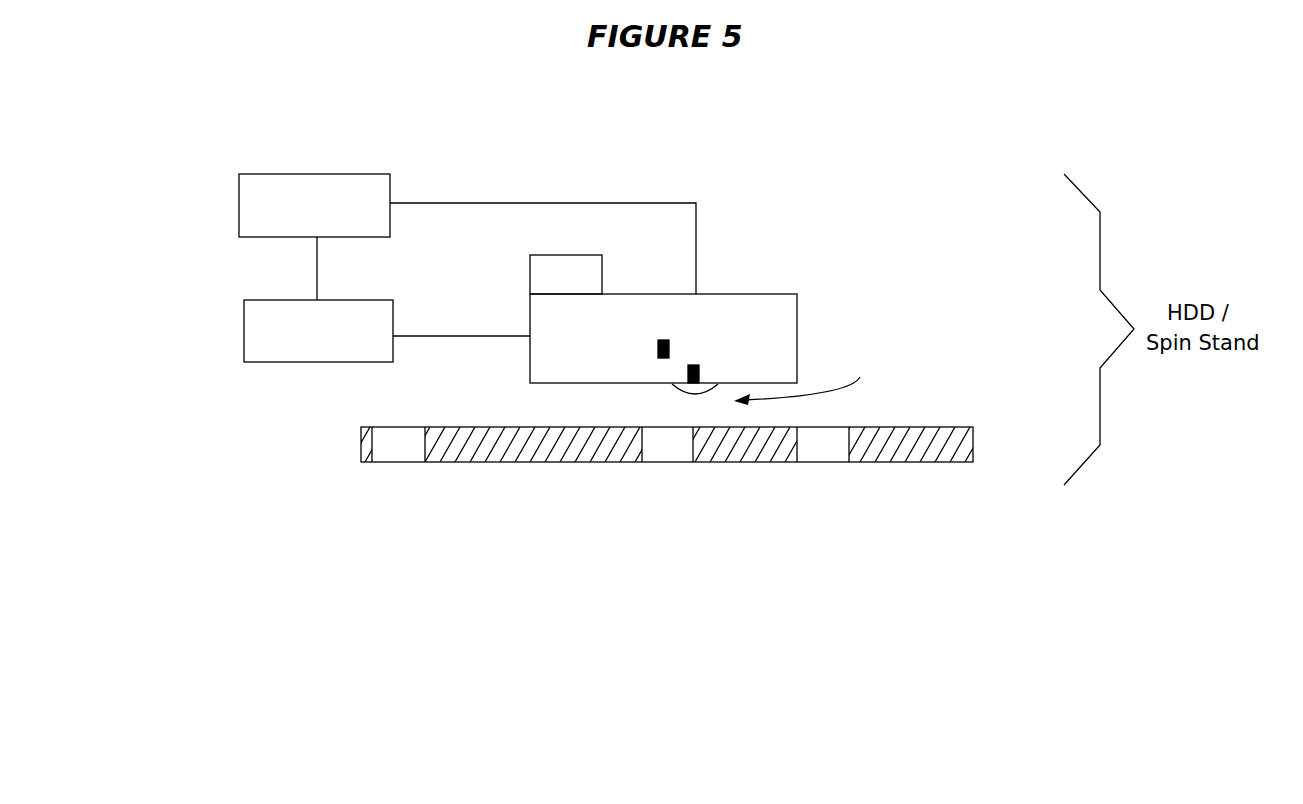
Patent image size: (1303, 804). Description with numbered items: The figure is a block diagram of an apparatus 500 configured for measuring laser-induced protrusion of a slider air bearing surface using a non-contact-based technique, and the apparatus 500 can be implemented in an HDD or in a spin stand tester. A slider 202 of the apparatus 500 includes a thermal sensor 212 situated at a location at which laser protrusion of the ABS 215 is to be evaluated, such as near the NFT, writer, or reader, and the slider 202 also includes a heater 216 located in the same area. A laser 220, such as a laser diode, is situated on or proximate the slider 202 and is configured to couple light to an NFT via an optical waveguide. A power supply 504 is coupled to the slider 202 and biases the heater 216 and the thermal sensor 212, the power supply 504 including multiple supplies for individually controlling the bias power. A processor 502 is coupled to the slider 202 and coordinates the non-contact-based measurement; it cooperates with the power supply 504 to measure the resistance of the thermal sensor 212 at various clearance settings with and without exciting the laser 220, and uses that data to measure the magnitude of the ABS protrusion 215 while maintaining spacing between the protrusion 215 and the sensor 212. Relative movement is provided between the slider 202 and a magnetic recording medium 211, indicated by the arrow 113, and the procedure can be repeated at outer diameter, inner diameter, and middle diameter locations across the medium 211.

The apparatus 500 is at (846, 142).
The processor 502 is at (239, 204).
The power supply 504 is at (244, 331).
The laser 220 is at (530, 272).
The slider 202 is at (798, 313).
The heater 216 is at (669, 348).
The thermal sensor 212 is at (699, 373).
The ABS protrusion 215 is at (673, 388).
The disk rotation direction 113 is at (809, 379).
The magnetic recording medium 211 is at (361, 437).